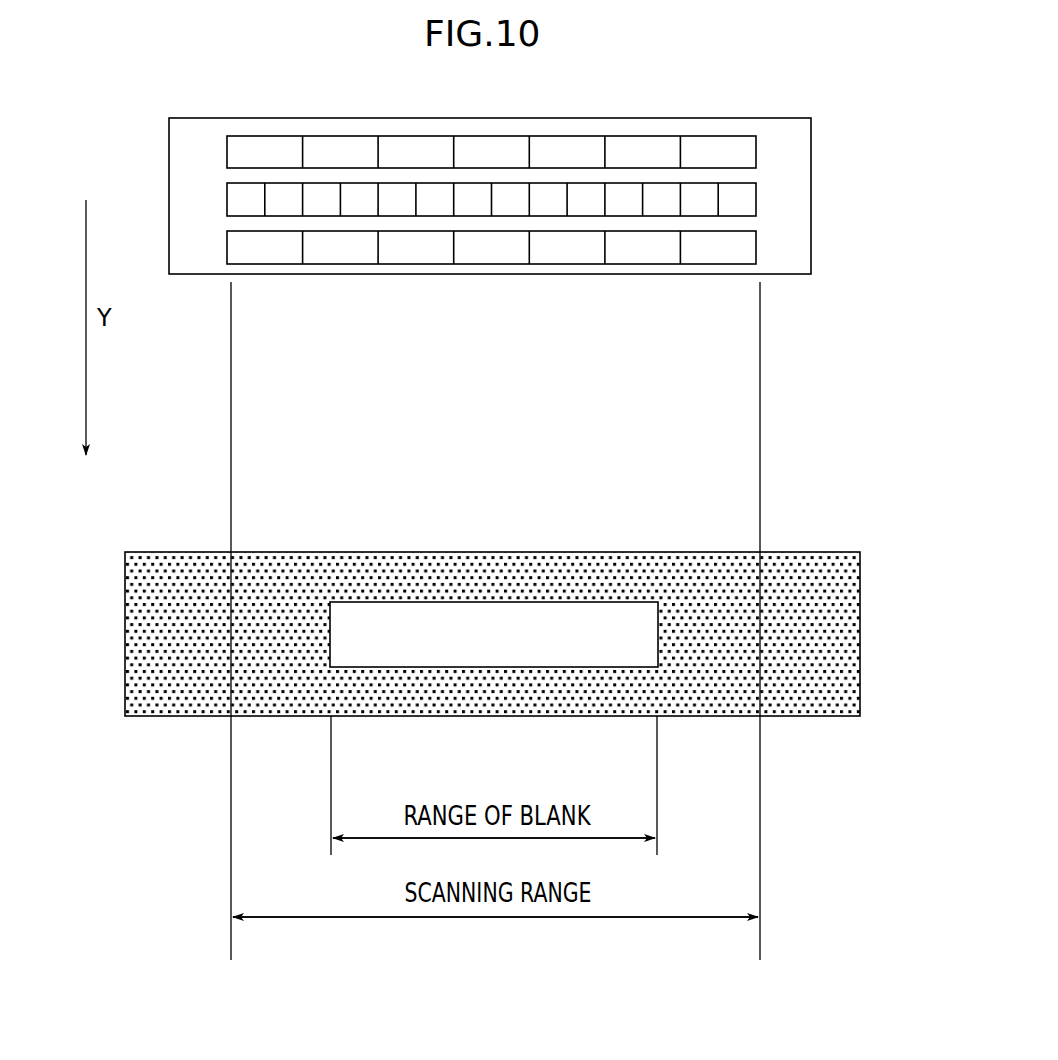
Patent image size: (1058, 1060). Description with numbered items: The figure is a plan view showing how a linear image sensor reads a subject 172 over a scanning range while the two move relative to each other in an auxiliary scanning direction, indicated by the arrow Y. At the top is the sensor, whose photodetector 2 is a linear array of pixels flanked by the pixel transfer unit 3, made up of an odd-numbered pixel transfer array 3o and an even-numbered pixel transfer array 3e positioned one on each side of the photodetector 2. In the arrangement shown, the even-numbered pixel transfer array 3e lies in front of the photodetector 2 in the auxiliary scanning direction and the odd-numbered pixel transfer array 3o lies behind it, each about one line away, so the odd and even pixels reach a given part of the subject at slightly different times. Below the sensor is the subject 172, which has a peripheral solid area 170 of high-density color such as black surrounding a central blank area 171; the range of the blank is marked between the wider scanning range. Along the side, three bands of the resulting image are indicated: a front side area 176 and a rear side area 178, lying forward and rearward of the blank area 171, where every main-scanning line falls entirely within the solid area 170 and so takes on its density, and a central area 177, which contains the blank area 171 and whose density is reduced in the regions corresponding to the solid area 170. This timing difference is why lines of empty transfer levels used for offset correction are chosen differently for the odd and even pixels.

The pixel transfer unit 3 is at (897, 82).
The odd-numbered pixel transfer array 3o is at (754, 148).
The even-numbered pixel transfer array 3e is at (754, 243).
The photodetector 2 is at (754, 187).
The peripheral solid area 170 is at (663, 558).
The blank area 171 is at (594, 617).
The subject 172 is at (784, 531).
The front side area 176 is at (117, 553).
The central area 177 is at (117, 605).
The rear side area 178 is at (117, 670).